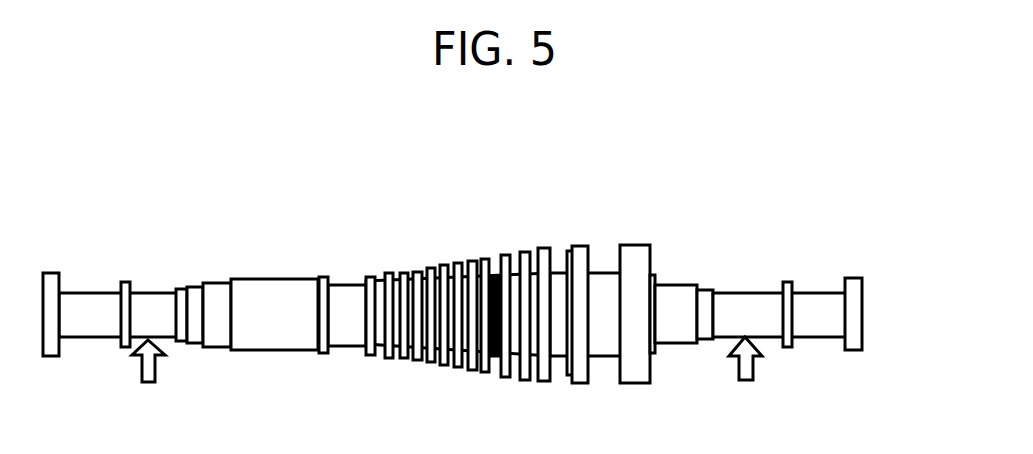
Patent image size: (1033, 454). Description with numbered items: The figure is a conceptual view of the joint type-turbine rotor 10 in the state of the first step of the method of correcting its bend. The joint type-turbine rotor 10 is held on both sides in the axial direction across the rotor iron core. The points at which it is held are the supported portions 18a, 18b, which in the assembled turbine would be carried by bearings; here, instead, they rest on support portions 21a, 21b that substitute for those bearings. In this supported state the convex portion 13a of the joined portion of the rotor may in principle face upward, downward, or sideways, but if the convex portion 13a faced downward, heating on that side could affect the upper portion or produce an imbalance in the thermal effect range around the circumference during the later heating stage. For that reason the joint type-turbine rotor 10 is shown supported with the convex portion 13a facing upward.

The joint type-turbine rotor 10 is at (685, 186).
The convex portion 13a is at (495, 275).
The supported portion 18a is at (153, 292).
The supported portion 18b is at (758, 292).
The support portion 21a is at (148, 379).
The support portion 21b is at (749, 377).